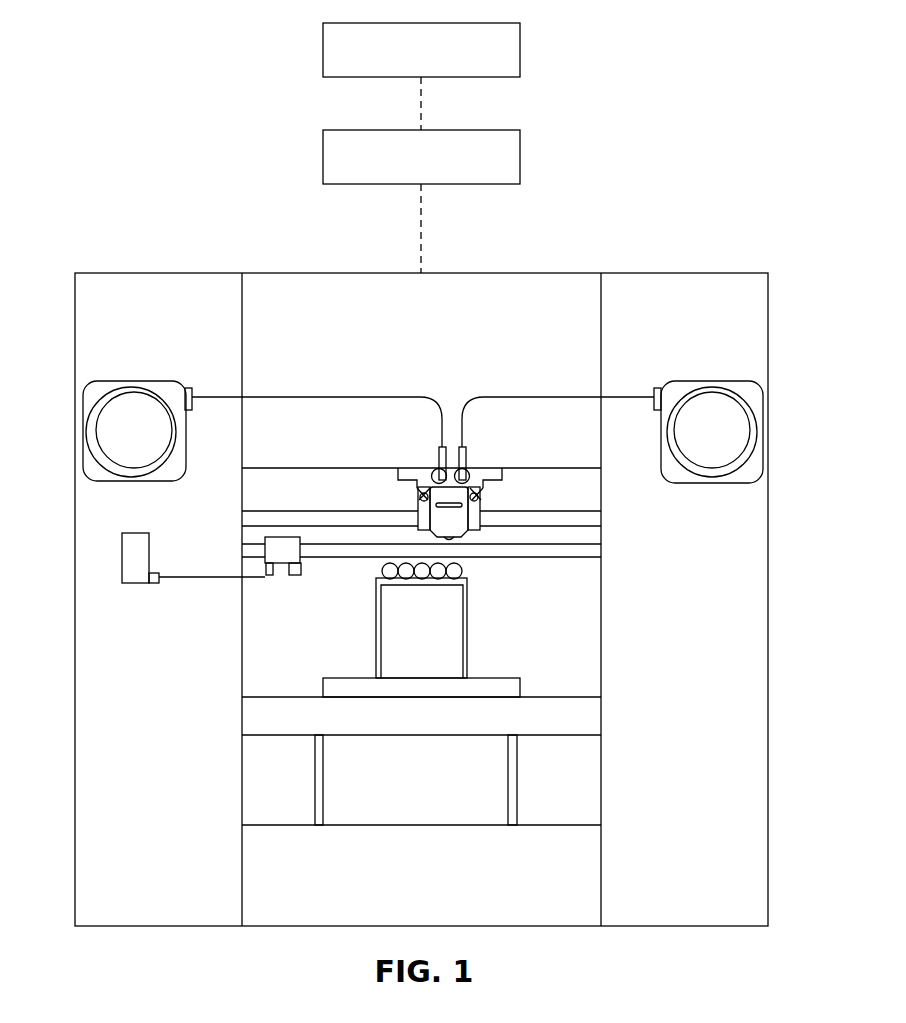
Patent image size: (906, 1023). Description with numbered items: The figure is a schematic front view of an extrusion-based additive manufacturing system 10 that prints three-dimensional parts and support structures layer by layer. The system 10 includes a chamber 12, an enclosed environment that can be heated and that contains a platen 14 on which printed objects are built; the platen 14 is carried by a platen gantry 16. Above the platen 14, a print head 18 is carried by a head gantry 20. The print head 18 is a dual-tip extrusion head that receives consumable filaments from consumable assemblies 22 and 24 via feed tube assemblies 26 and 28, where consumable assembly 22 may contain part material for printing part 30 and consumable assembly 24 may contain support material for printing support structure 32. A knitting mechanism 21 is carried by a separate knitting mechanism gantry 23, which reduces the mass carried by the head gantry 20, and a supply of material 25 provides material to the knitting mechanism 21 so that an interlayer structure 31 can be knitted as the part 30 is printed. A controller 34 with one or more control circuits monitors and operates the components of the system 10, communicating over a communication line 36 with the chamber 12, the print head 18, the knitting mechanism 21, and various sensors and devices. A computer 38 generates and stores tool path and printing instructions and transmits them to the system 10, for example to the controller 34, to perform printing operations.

The additive manufacturing system 10 is at (126, 58).
The chamber 12 is at (250, 666).
The platen 14 is at (588, 715).
The platen gantry 16 is at (526, 780).
The print head 18 is at (488, 494).
The head gantry 20 is at (312, 511).
The knitting mechanism 21 is at (268, 537).
The consumable assembly 22 is at (130, 383).
The knitting mechanism gantry 23 is at (262, 560).
The consumable assembly 24 is at (680, 381).
The supply of material 25 is at (135, 580).
The feed tube assembly 26 is at (305, 396).
The feed tube assembly 28 is at (568, 396).
The part 30 is at (376, 635).
The interlayer structure 31 is at (462, 572).
The support structure 32 is at (520, 688).
The controller 34 is at (520, 156).
The communication line 36 is at (427, 250).
The computer 38 is at (520, 48).